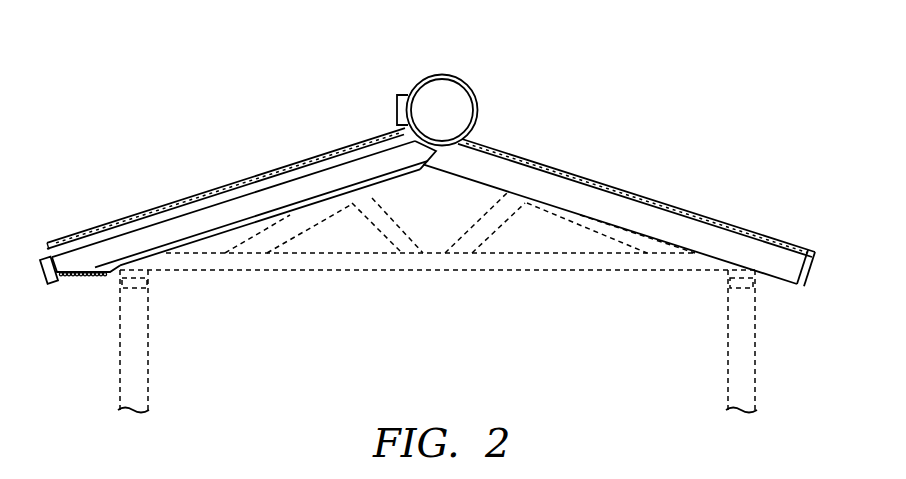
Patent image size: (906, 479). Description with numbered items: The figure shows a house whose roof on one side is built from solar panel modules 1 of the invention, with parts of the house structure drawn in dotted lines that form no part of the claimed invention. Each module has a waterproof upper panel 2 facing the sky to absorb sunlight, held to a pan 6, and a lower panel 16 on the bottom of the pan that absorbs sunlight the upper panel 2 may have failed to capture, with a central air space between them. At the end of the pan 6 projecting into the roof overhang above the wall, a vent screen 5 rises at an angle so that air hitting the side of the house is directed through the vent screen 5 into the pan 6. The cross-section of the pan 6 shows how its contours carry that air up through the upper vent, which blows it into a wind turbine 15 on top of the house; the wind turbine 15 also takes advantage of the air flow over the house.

The solar panel module 1 is at (427, 216).
The upper panel 2 is at (266, 172).
The vent screen 5 is at (80, 278).
The pan 6 is at (406, 183).
The wind turbine 15 is at (465, 76).
The lower panel 16 is at (322, 198).